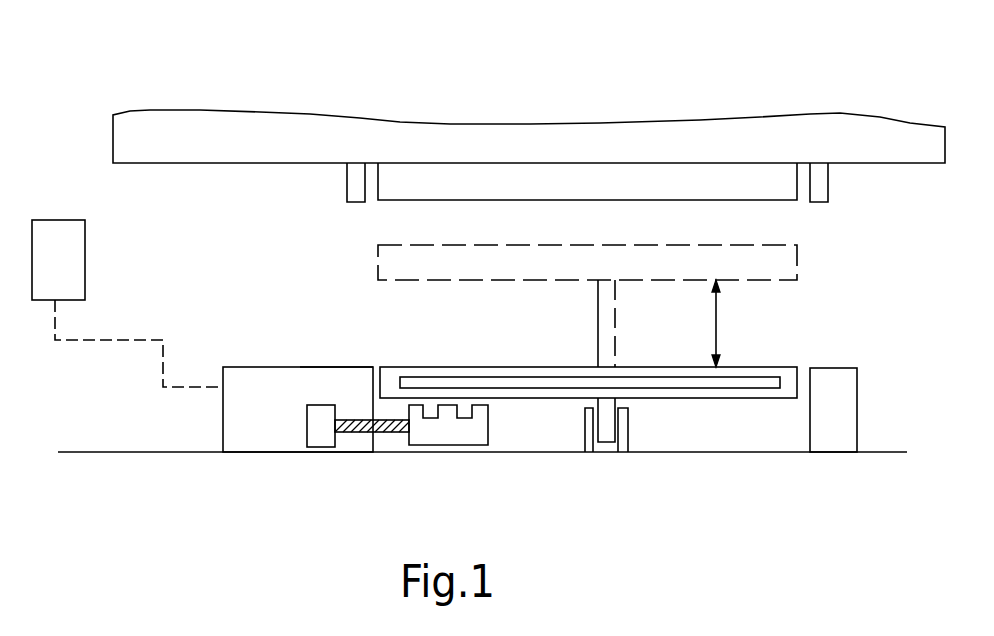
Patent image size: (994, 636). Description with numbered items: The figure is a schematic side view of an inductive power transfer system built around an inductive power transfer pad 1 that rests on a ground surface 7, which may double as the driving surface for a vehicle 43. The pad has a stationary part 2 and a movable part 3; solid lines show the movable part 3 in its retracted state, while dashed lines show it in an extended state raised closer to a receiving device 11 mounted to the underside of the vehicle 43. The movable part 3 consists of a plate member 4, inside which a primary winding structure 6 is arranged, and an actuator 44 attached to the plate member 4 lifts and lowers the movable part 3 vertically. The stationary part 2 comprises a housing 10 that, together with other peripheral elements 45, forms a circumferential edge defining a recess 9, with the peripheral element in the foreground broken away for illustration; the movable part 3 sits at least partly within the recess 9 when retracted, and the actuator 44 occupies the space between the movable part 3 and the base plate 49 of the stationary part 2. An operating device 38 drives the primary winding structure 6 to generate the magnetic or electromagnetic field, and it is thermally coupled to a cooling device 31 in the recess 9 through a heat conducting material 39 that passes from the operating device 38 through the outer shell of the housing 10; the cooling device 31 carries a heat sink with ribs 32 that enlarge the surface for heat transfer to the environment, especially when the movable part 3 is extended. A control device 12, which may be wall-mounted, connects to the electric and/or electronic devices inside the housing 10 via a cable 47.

The inductive power transfer pad 1 is at (217, 336).
The stationary part 2 is at (287, 367).
The movable part 3 is at (798, 265).
The plate member 4 is at (490, 372).
The primary winding structure 6 is at (412, 378).
The ground surface 7 is at (100, 452).
The recess 9 is at (767, 415).
The housing 10 is at (325, 368).
The receiving device 11 is at (767, 201).
The control device 12 is at (85, 252).
The cooling device 31 is at (488, 430).
The ribs 32 is at (481, 413).
The operating device 38 is at (307, 413).
The heat conducting material 39 is at (347, 432).
The vehicle 43 is at (610, 138).
The actuator 44 is at (628, 423).
The peripheral elements 45 is at (857, 368).
The cable 47 is at (117, 338).
The base plate 49 is at (538, 452).